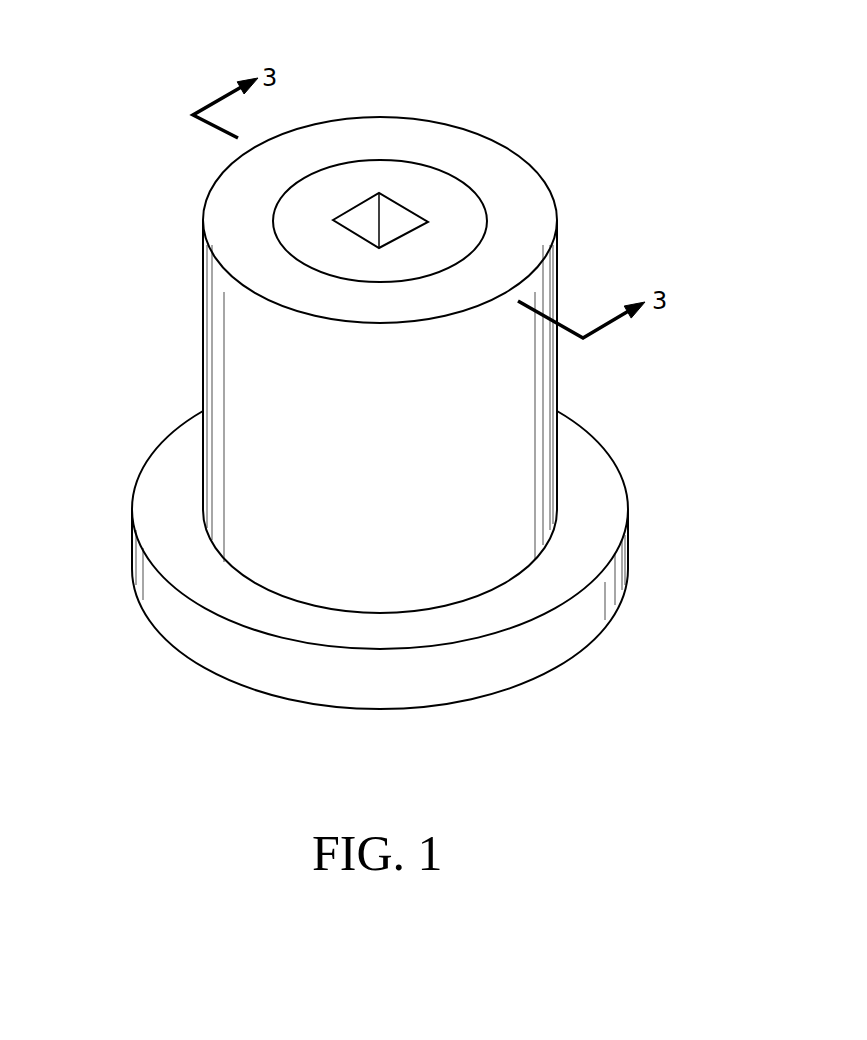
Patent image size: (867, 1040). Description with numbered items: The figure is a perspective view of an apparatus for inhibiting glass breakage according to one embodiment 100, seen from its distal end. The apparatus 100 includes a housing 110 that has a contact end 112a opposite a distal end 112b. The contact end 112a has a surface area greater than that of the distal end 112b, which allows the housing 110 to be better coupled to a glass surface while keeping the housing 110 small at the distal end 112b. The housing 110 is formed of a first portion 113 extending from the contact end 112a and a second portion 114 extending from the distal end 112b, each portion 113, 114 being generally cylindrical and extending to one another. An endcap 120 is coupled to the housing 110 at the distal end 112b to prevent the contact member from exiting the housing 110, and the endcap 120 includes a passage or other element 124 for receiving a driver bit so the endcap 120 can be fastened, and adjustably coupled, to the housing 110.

The apparatus for inhibiting glass breakage 100 is at (488, 52).
The housing 110 is at (190, 343).
The contact end 112a is at (603, 668).
The distal end 112b is at (578, 245).
The first portion 113 is at (628, 545).
The second portion 114 is at (558, 370).
The endcap 120 is at (430, 193).
The passage for receiving a driver bit 124 is at (367, 218).